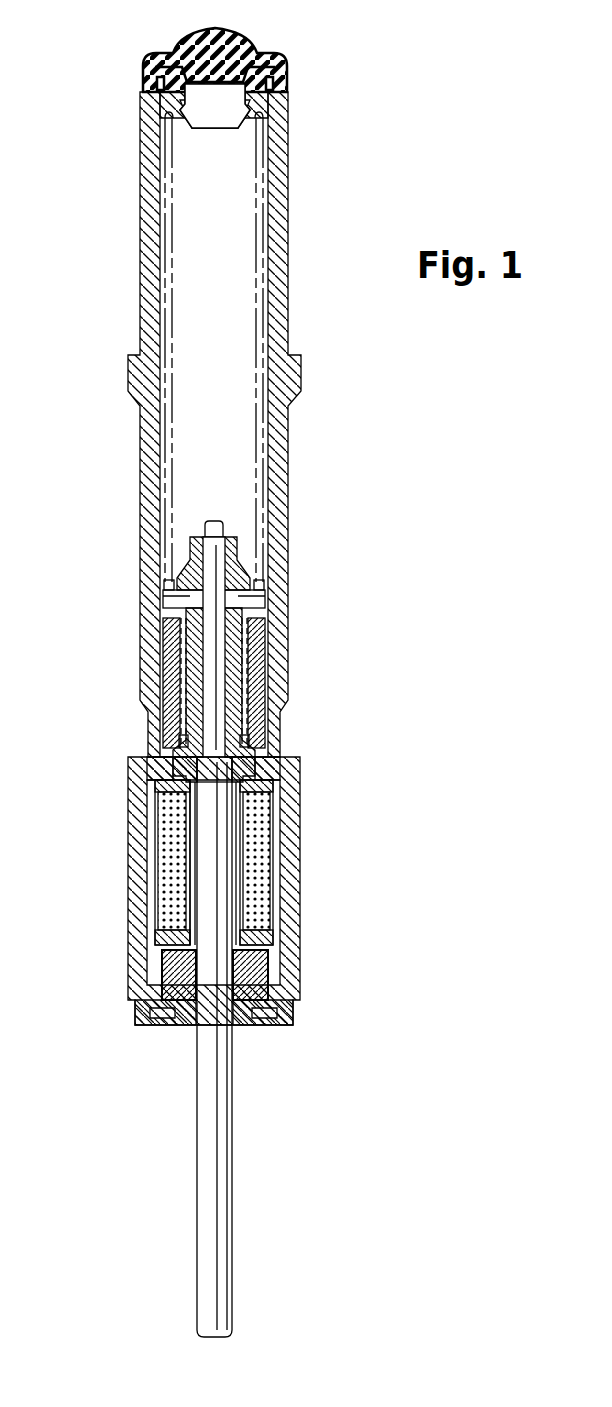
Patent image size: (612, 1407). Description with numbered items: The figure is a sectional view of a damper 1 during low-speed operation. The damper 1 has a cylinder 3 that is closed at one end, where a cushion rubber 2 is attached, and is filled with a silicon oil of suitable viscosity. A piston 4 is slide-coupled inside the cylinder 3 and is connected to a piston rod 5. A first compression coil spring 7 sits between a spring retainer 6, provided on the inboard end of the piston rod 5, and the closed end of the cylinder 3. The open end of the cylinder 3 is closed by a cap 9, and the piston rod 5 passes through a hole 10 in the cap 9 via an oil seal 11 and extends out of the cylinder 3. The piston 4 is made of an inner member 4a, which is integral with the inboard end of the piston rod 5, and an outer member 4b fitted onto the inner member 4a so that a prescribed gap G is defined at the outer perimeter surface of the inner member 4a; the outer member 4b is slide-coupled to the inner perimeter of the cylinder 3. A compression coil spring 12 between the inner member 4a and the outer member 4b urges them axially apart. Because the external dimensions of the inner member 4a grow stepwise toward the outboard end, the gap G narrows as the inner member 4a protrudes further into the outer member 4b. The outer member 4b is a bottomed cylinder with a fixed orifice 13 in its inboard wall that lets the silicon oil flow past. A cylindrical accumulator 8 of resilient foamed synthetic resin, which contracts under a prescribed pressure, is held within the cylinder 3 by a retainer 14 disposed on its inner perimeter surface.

The damper 1 is at (346, 128).
The cushion rubber 2 is at (237, 47).
The cylinder 3 is at (283, 276).
The piston 4 is at (266, 611).
The inner member 4a is at (262, 768).
The outer member 4b is at (263, 665).
The piston rod 5 is at (221, 1176).
The spring retainer 6 is at (166, 603).
The first compression coil spring 7 is at (167, 437).
The accumulator 8 is at (268, 860).
The cap 9 is at (281, 1013).
The hole 10 is at (214, 1035).
The oil seal 11 is at (178, 1006).
The compression coil spring 12 is at (165, 668).
The fixed orifice 13 is at (162, 612).
The retainer 14 is at (150, 888).
The gap G is at (160, 762).